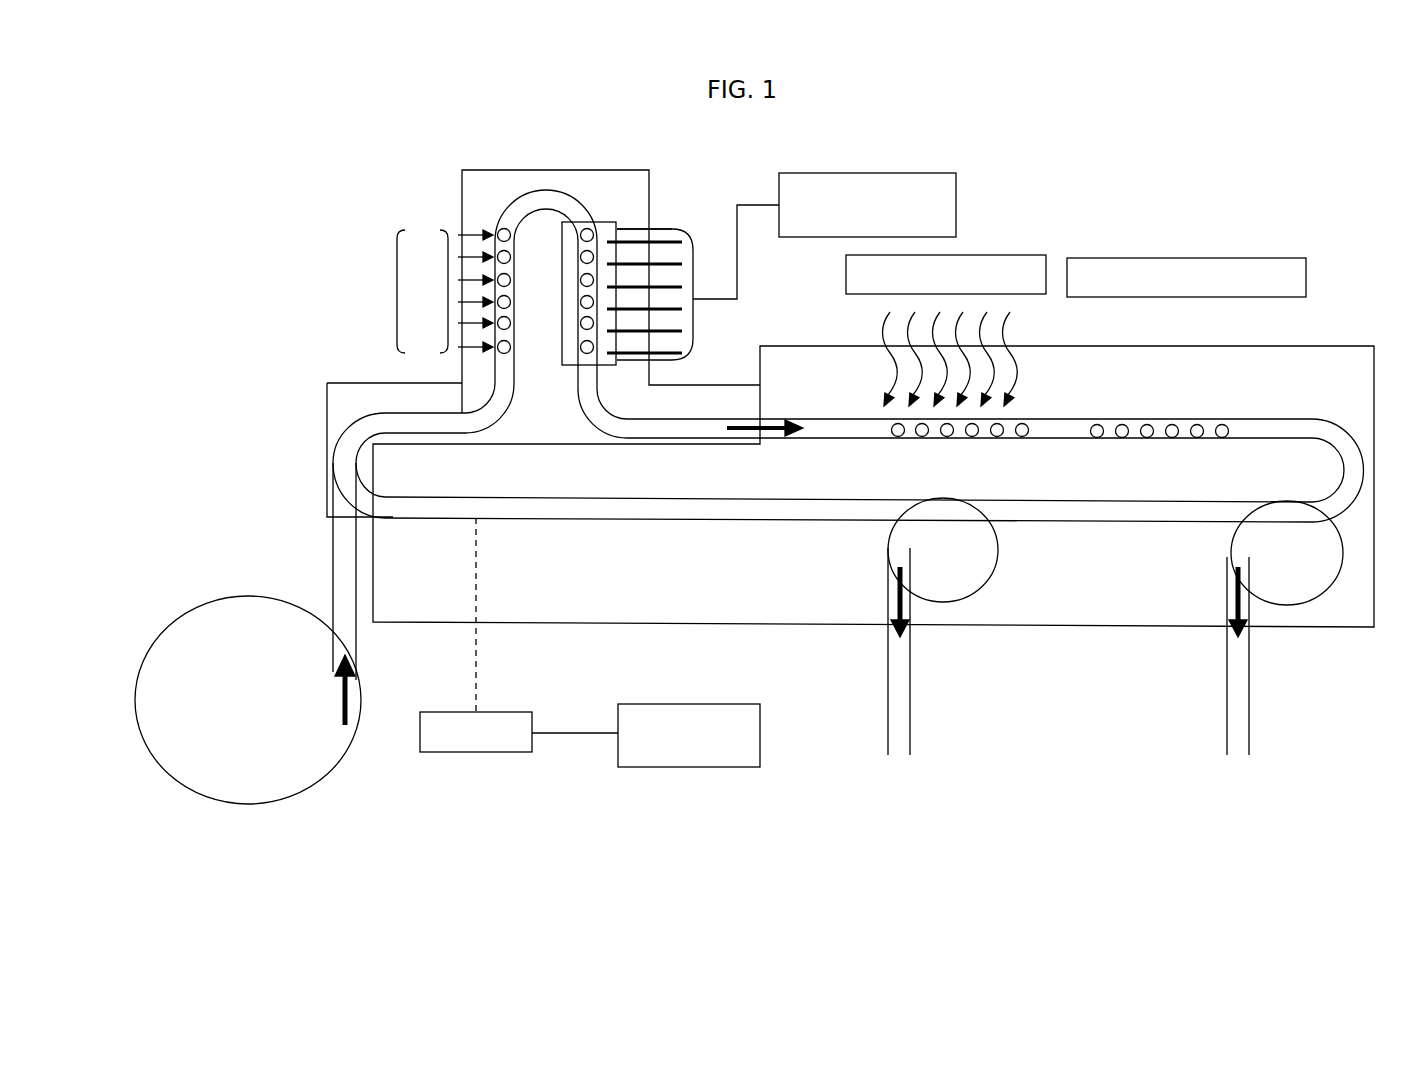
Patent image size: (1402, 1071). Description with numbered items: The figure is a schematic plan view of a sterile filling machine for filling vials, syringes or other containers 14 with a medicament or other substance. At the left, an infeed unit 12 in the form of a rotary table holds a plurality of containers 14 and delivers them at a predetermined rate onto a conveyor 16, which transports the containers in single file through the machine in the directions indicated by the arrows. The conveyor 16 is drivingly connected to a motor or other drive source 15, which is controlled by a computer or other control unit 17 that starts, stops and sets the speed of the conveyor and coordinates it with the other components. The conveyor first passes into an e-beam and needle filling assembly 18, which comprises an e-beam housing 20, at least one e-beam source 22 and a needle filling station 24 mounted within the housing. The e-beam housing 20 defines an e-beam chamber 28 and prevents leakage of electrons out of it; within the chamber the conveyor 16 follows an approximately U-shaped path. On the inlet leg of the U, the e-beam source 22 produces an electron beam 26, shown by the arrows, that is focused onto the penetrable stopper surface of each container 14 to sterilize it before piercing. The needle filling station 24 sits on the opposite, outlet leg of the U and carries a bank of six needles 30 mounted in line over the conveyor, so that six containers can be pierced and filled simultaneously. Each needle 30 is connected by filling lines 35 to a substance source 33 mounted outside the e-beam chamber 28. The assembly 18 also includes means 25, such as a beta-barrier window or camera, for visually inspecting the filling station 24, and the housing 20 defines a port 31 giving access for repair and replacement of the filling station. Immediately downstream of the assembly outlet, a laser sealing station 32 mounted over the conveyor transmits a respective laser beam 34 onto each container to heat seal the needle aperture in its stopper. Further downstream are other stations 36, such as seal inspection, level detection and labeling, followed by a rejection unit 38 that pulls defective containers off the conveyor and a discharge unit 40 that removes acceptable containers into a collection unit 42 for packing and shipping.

The infeed unit 12 is at (217, 600).
The containers 14 is at (507, 230).
The drive source 15 is at (487, 711).
The conveyor 16 is at (341, 570).
The control unit 17 is at (632, 703).
The e-beam and needle filling assembly 18 is at (599, 160).
The e-beam housing 20 is at (462, 200).
The e-beam source 22 is at (393, 292).
The needle filling station 24 is at (695, 253).
The means for visually inspecting the filling station 25 is at (617, 233).
The electron beam 26 is at (447, 353).
The e-beam chamber 28 is at (484, 202).
The needles 30 is at (683, 355).
The port 31 is at (657, 232).
The laser sealing station 32 is at (968, 254).
The substance source 33 is at (892, 172).
The laser beam 34 is at (887, 327).
The filling lines 35 is at (737, 244).
The other stations 36 is at (1182, 257).
The rejection unit 38 is at (1316, 602).
The discharge unit 40 is at (978, 583).
The collection unit 42 is at (888, 697).